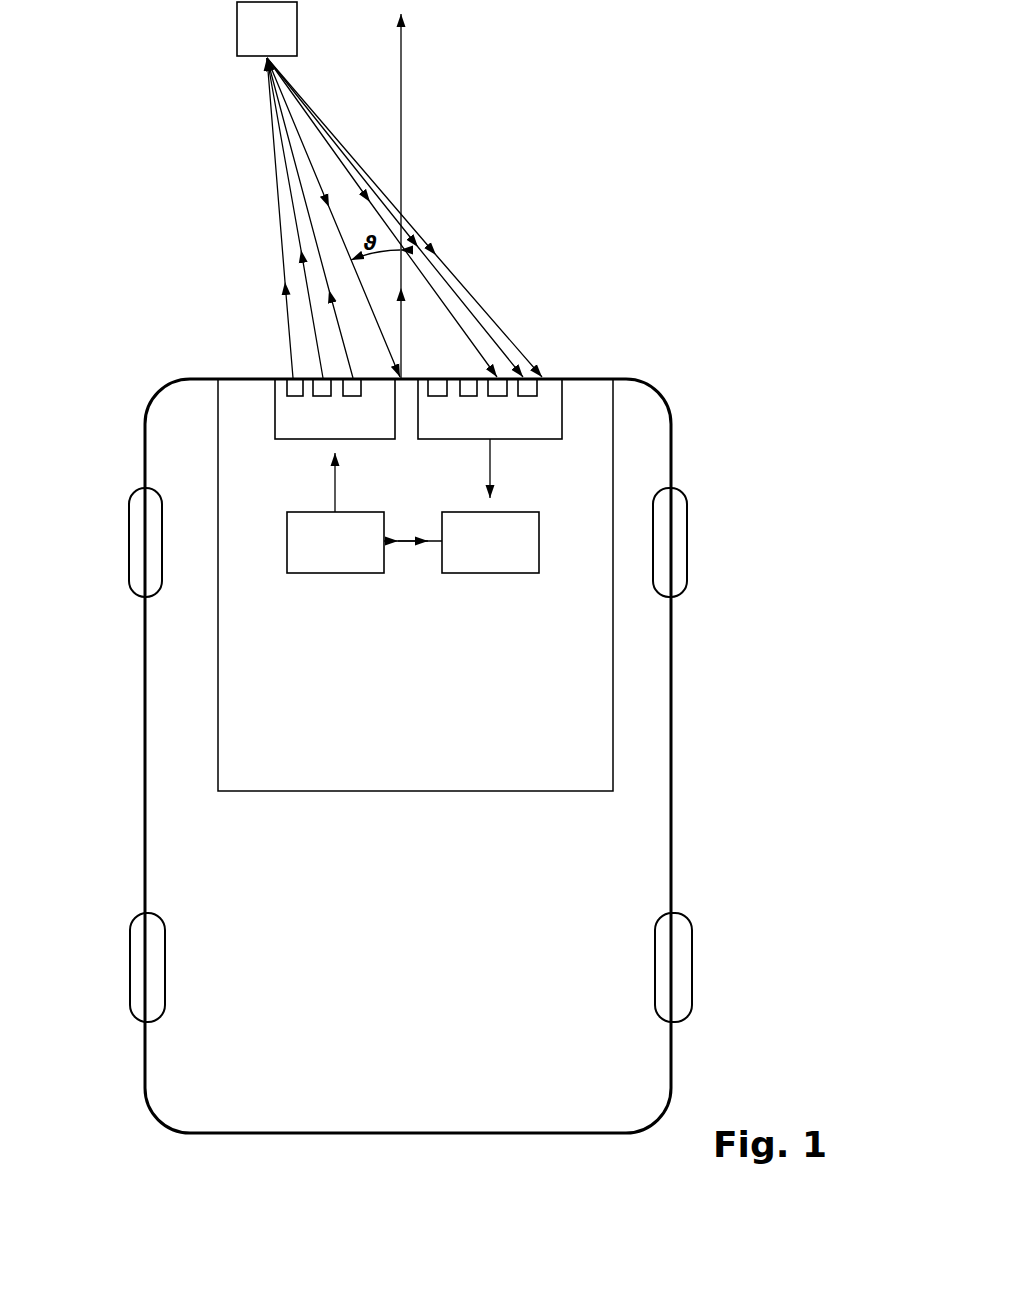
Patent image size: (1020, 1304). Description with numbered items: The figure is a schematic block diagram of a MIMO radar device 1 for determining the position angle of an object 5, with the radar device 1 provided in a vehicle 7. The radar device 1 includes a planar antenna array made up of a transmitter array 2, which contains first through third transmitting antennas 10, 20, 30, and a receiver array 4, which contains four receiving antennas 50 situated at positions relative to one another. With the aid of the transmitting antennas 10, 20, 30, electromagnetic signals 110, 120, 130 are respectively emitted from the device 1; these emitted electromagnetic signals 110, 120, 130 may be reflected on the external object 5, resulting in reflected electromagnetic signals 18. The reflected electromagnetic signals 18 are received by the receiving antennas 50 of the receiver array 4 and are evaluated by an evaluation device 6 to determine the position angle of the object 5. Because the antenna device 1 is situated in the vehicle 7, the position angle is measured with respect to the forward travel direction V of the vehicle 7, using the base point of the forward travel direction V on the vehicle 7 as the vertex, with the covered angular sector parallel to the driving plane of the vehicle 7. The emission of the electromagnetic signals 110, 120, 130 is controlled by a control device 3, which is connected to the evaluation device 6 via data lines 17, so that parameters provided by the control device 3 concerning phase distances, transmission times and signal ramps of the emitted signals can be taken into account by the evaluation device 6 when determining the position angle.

The MIMO radar device 1 is at (405, 793).
The transmitter array 2 is at (275, 432).
The control device 3 is at (333, 574).
The receiver array 4 is at (562, 426).
The object 5 is at (298, 23).
The evaluation device 6 is at (492, 574).
The vehicle 7 is at (170, 1060).
The first transmitting antenna 10 is at (285, 386).
The data lines 17 is at (417, 543).
The reflected electromagnetic signals 18 is at (455, 317).
The second transmitting antenna 20 is at (322, 397).
The third transmitting antenna 30 is at (350, 397).
The receiving antennas 50 is at (470, 397).
The electromagnetic signal 110 is at (270, 110).
The electromagnetic signal 120 is at (287, 170).
The electromagnetic signal 130 is at (327, 193).
The forward travel direction V is at (402, 72).